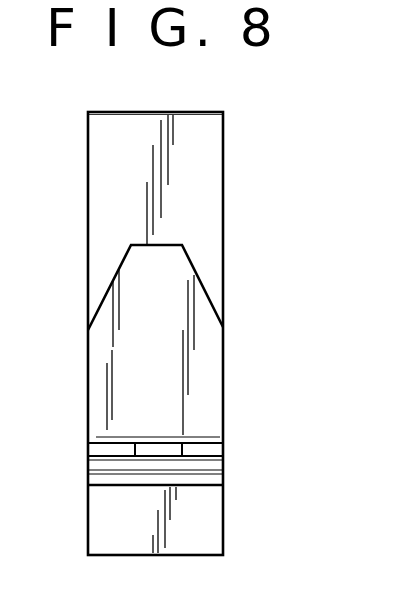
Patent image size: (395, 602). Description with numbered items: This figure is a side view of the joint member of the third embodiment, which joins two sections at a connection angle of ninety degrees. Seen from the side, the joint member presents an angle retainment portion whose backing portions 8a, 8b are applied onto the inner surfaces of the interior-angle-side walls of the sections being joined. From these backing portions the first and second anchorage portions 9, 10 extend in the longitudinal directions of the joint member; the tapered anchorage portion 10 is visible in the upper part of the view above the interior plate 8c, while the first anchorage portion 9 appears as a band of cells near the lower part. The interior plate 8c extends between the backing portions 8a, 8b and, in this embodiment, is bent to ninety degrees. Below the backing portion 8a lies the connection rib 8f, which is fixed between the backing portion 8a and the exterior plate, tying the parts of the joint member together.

The backing portion 8b is at (212, 190).
The second anchorage portion 10 is at (205, 300).
The interior plate 8c is at (210, 367).
The first anchorage portion 9 is at (217, 450).
The backing portion 8a is at (218, 477).
The connection rib 8f is at (217, 537).